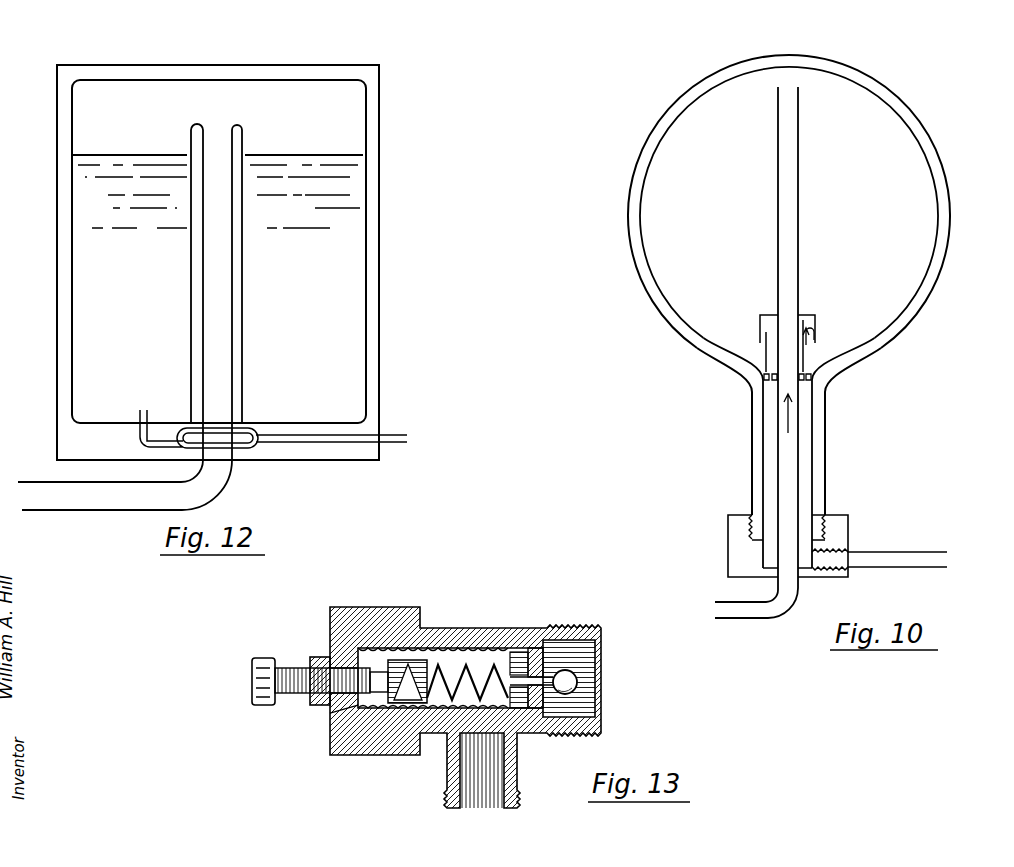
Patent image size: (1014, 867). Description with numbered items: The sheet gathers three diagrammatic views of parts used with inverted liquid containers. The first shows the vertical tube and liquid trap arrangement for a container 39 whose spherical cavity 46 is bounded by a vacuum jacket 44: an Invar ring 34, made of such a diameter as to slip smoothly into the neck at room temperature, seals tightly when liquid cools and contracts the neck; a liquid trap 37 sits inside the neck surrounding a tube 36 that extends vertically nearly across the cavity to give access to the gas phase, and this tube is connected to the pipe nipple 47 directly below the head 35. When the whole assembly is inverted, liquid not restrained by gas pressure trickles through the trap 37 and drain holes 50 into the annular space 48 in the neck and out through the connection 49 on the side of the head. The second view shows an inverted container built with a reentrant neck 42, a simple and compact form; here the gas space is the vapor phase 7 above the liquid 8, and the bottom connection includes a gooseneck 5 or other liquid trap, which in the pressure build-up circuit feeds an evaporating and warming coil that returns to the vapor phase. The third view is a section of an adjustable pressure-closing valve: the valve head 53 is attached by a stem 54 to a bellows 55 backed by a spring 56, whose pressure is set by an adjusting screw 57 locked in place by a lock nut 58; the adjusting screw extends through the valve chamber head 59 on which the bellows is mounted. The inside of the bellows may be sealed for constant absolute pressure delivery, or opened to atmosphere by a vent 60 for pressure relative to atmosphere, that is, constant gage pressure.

In FIG. 12, the gooseneck 5 is at (252, 448).
In FIG. 12, the vapor phase 7 is at (100, 132).
In FIG. 12, the liquid 8 is at (352, 175).
In FIG. 12, the reentrant neck 42 is at (220, 273).
In FIG. 12, the vacuum jacket 44 is at (315, 73).
In FIG. 10, the vacuum jacket 44 is at (697, 332).
In FIG. 10, the Invar ring 34 is at (812, 380).
In FIG. 10, the head 35 is at (737, 530).
In FIG. 10, the tube 36 is at (790, 250).
In FIG. 10, the liquid trap 37 is at (818, 323).
In FIG. 10, the container 39 is at (940, 158).
In FIG. 10, the spherical cavity 46 is at (660, 183).
In FIG. 10, the pipe nipple 47 is at (748, 600).
In FIG. 10, the annular space 48 is at (805, 483).
In FIG. 10, the connection 49 is at (902, 558).
In FIG. 10, the drain holes 50 is at (772, 382).
In FIG. 13, the valve head 53 is at (578, 675).
In FIG. 13, the stem 54 is at (550, 678).
In FIG. 13, the bellows 55 is at (490, 650).
In FIG. 13, the spring 56 is at (447, 670).
In FIG. 13, the adjusting screw 57 is at (298, 663).
In FIG. 13, the lock nut 58 is at (325, 657).
In FIG. 13, the valve chamber head 59 is at (358, 607).
In FIG. 13, the vent 60 is at (350, 713).